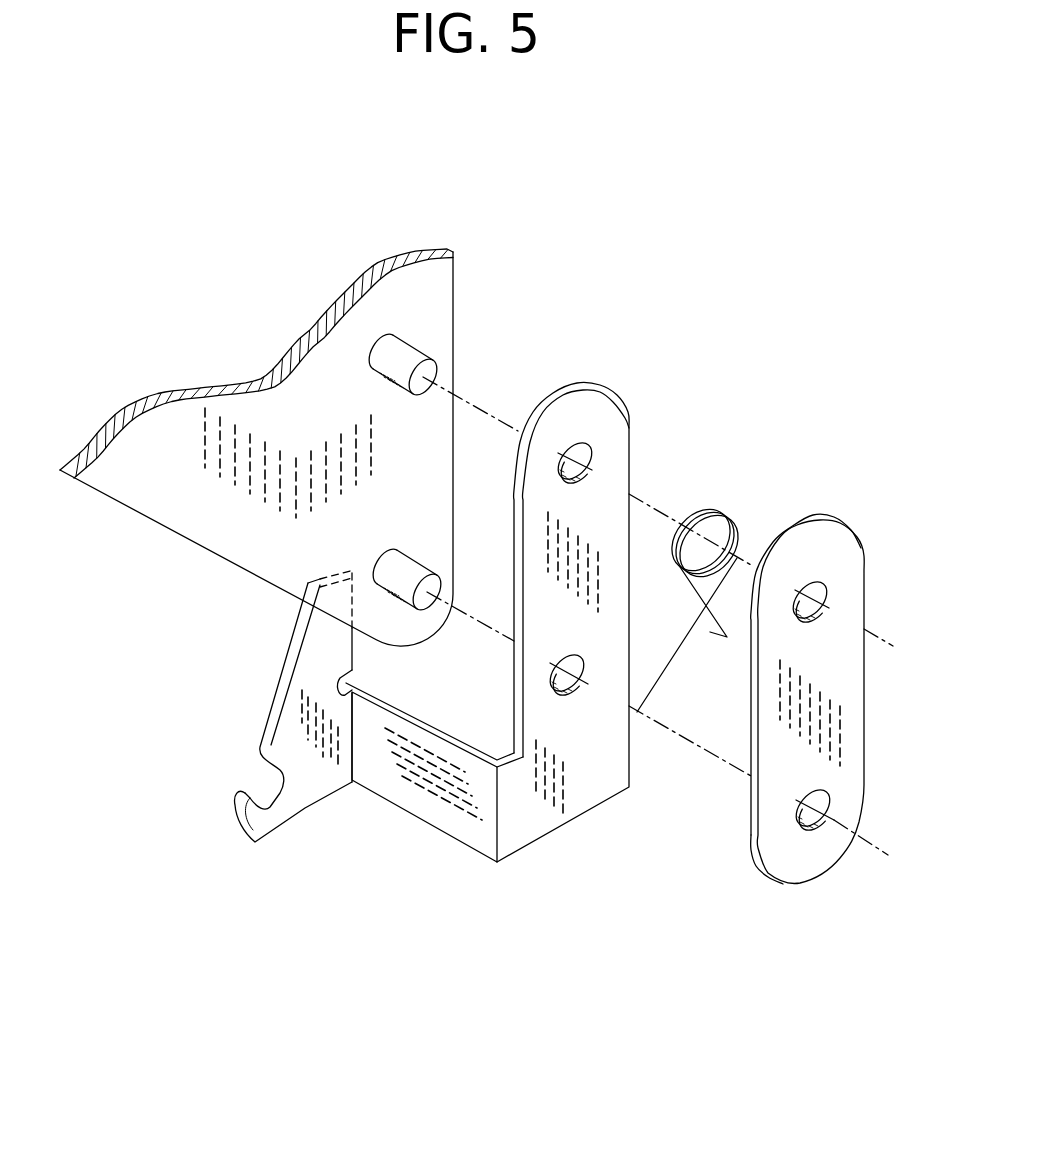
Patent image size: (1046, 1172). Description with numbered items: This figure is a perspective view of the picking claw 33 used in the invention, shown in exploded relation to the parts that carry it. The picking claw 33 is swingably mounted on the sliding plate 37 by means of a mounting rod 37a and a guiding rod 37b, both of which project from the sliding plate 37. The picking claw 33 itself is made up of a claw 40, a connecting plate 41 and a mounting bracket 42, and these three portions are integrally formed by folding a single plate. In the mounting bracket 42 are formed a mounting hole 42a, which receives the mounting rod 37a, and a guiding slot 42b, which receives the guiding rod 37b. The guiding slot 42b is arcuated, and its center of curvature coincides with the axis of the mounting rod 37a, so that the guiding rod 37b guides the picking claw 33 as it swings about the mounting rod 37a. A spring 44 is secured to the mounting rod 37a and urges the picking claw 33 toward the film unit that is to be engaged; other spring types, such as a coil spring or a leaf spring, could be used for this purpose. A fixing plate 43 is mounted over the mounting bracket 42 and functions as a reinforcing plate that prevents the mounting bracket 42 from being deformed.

The picking claw 33 is at (463, 668).
The sliding plate 37 is at (460, 320).
The mounting rod 37a is at (386, 350).
The guiding rod 37b is at (398, 565).
The claw 40 is at (285, 808).
The connecting plate 41 is at (403, 795).
The mounting bracket 42 is at (594, 663).
The mounting hole 42a is at (586, 456).
The guiding slot 42b is at (565, 658).
The fixing plate 43 is at (793, 865).
The spring 44 is at (712, 505).